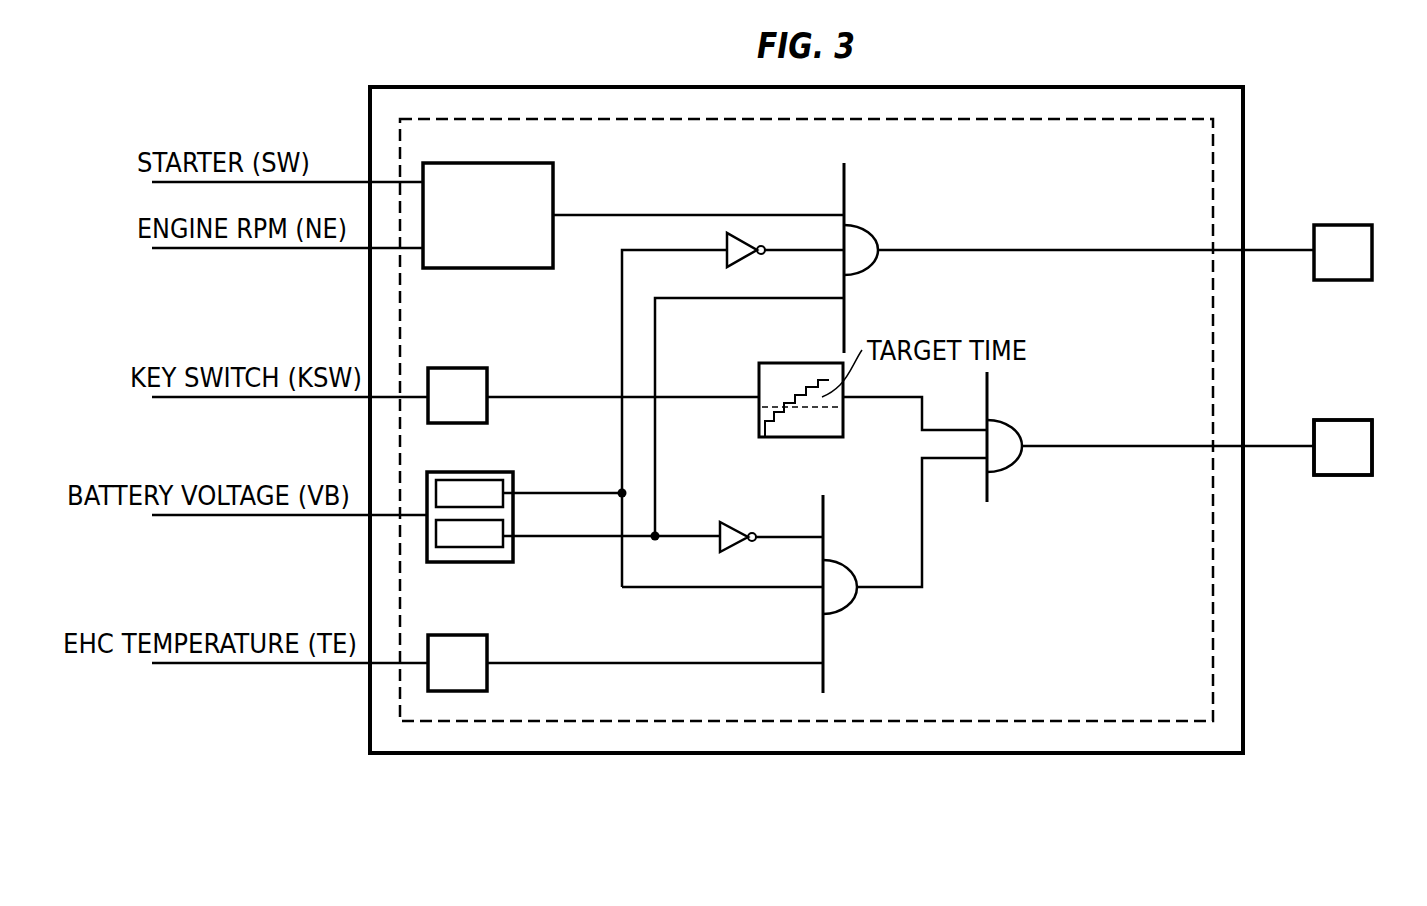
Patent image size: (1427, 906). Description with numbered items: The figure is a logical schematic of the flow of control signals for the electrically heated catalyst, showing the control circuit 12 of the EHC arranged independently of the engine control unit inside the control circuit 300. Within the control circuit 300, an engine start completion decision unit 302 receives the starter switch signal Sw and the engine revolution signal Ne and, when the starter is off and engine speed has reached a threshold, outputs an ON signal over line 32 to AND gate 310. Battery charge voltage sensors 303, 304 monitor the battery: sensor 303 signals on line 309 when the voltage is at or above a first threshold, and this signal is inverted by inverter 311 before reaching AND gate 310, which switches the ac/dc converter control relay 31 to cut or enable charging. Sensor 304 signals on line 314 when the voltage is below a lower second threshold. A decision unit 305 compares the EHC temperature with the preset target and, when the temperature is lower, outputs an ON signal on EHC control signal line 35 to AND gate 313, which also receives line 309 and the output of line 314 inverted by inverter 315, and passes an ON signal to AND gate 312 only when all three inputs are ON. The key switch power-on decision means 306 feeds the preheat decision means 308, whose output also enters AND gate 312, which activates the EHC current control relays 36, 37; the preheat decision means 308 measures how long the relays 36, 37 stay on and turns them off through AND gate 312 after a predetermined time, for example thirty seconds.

The control circuit 300 is at (789, 755).
The control circuit of EHC 12 is at (941, 724).
The engine start completion decision unit 302 is at (497, 163).
The line 32 is at (698, 214).
The key switch power-on decision means 306 is at (460, 367).
The battery charge voltage sensor 303 is at (480, 480).
The battery charge voltage sensor 304 is at (475, 548).
The decision unit 305 is at (460, 634).
The EHC control signal line 35 is at (594, 663).
The line 309 is at (620, 373).
The line 314 is at (680, 456).
The inverter 311 is at (738, 265).
The AND gate 310 is at (859, 232).
The preheat decision means 308 is at (768, 363).
The inverter 315 is at (735, 523).
The AND gate 313 is at (843, 565).
The AND gate 312 is at (1009, 430).
The ac/dc converter control relay 31 is at (1345, 225).
The EHC current control relay 36 is at (1345, 420).
The EHC current control relay 37 is at (1343, 447).